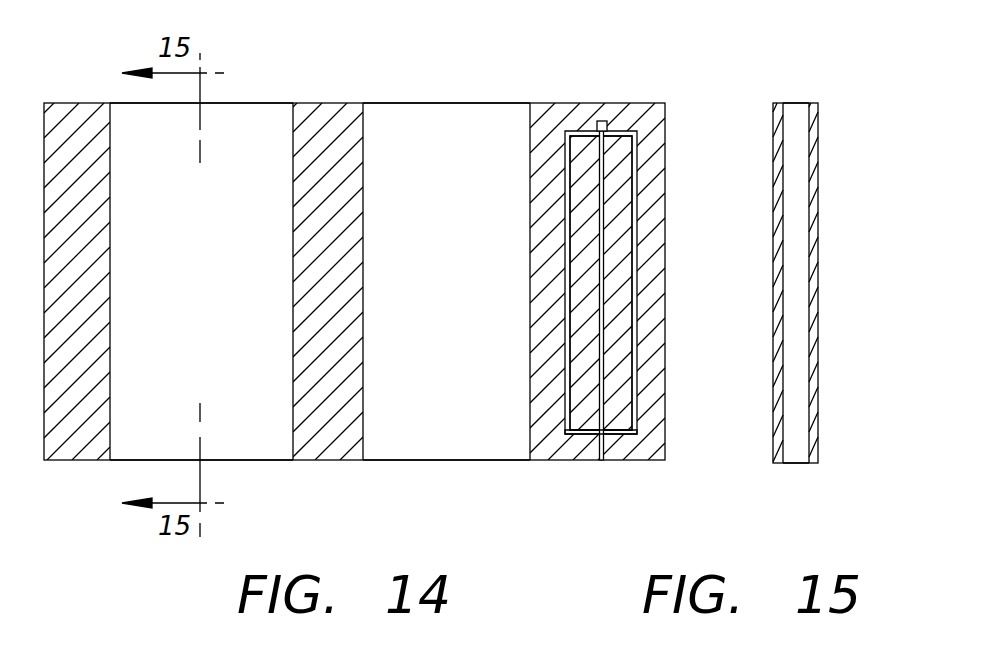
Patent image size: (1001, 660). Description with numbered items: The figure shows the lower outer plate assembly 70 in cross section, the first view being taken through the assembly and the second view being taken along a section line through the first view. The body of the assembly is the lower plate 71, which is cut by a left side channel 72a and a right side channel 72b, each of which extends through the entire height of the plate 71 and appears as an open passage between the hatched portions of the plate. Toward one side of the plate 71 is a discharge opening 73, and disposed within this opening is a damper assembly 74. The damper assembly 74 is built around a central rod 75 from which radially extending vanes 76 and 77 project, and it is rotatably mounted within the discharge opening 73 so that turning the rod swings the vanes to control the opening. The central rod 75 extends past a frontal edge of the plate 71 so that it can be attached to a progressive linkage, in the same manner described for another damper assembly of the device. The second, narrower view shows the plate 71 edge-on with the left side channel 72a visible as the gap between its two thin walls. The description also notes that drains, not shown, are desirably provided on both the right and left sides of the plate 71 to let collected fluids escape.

In FIG. 14, the lower outer plate assembly 70 is at (570, 70).
In FIG. 14, the lower plate 71 is at (342, 117).
In FIG. 15, the lower plate 71 is at (818, 287).
In FIG. 14, the left side channel 72a is at (241, 115).
In FIG. 15, the left side channel 72a is at (808, 380).
In FIG. 14, the right side channel 72b is at (453, 118).
In FIG. 14, the discharge opening 73 is at (638, 131).
In FIG. 14, the damper assembly 74 is at (630, 362).
In FIG. 14, the central rod 75 is at (603, 163).
In FIG. 14, the vane 76 is at (617, 212).
In FIG. 14, the vane 77 is at (563, 435).